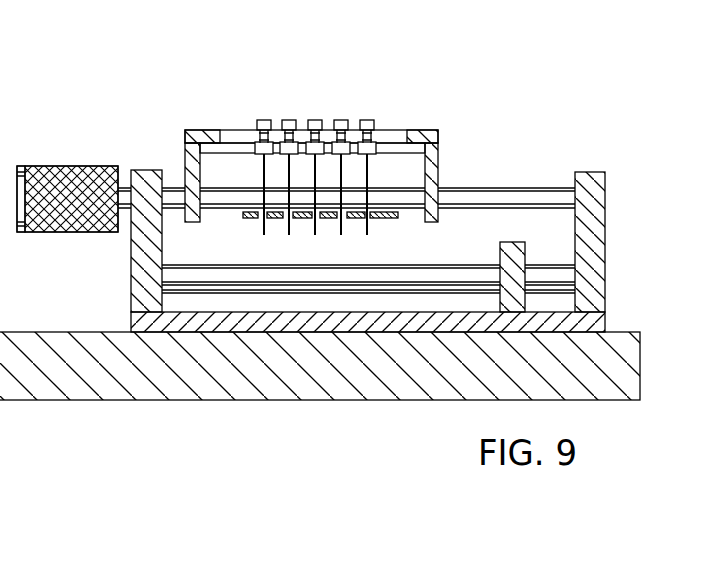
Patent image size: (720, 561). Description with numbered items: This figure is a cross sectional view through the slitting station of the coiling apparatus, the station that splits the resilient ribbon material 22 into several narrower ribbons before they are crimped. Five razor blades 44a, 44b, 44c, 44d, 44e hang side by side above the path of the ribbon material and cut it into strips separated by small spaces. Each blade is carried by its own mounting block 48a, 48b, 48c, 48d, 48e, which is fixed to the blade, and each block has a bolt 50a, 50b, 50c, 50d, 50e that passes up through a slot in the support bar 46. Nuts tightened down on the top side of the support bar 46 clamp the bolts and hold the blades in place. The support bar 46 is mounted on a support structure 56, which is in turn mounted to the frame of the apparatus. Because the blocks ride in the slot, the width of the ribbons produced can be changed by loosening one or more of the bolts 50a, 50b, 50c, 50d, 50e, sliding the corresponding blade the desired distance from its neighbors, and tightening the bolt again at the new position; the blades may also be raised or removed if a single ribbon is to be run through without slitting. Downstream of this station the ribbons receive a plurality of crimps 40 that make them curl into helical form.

The resilient ribbon material 22 is at (248, 219).
The crimps 40 is at (320, 446).
The razor blade 44a is at (428, 170).
The razor blade 44b is at (424, 180).
The razor blade 44c is at (288, 143).
The razor blade 44d is at (341, 212).
The razor blade 44e is at (258, 165).
The support bar 46 is at (430, 131).
The mounting block 48a is at (431, 148).
The mounting block 48b is at (342, 128).
The mounting block 48c is at (322, 128).
The mounting block 48d is at (260, 122).
The mounting block 48e is at (256, 133).
The bolt 50a is at (377, 128).
The bolt 50b is at (358, 123).
The bolt 50c is at (312, 172).
The bolt 50d is at (278, 126).
The bolt 50e is at (256, 128).
The support structure 56 is at (130, 268).